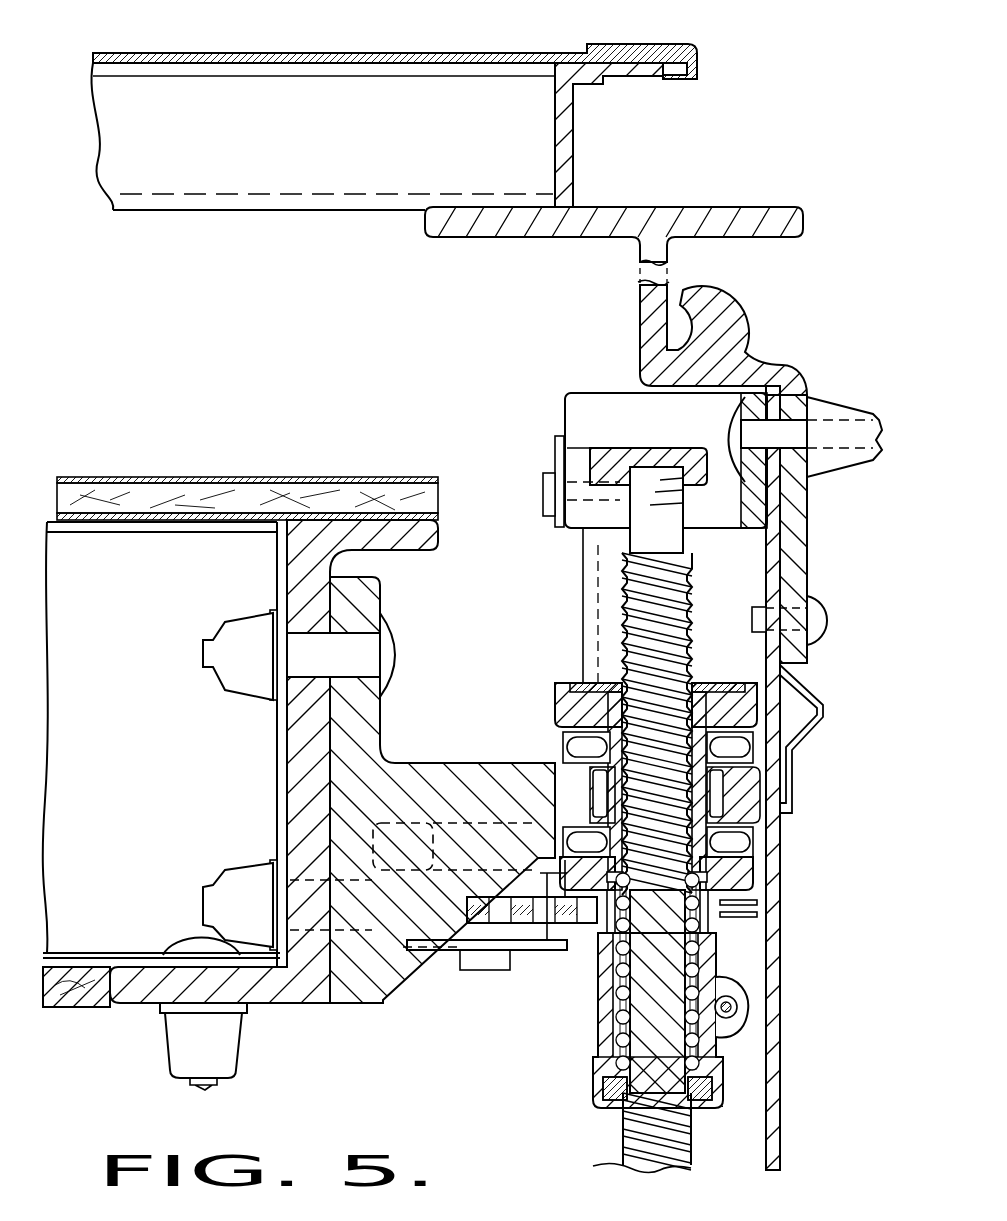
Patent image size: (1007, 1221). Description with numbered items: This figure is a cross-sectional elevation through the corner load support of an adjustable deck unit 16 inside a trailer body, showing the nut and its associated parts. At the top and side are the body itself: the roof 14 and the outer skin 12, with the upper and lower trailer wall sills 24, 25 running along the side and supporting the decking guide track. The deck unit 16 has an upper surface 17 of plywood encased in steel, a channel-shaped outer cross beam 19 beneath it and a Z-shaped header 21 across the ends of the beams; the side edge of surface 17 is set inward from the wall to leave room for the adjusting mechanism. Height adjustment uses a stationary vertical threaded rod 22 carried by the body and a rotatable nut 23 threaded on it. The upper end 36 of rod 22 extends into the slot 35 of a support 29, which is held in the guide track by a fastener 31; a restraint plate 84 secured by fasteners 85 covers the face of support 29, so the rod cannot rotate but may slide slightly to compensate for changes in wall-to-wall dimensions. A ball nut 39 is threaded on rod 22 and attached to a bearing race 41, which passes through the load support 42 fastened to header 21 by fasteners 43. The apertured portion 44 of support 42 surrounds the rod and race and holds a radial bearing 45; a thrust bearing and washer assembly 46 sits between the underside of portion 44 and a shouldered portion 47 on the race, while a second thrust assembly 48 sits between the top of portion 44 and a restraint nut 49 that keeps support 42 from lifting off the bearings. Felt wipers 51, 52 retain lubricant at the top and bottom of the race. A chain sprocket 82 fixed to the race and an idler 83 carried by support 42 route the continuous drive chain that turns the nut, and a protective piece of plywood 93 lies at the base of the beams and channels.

The skin 12 is at (327, 22).
The roof 14 is at (340, 213).
The deck unit 16 is at (221, 452).
The upper surface 17 is at (107, 490).
The outer cross beam 19 is at (80, 743).
The header 21 is at (307, 773).
The threaded rod 22 is at (640, 1142).
The nut 23 is at (659, 999).
The upper trailer wall sill 24 is at (787, 233).
The lower trailer wall sill 25 is at (713, 528).
The support 29 is at (757, 500).
The fastener 31 is at (840, 425).
The slot 35 is at (713, 530).
The upper end of rod 36 is at (630, 538).
The ball nut 39 is at (720, 1053).
The bearing race 41 is at (763, 800).
The load support 42 is at (430, 662).
The fastener 43 is at (240, 633).
The apertured portion 44 is at (696, 803).
The radial bearing 45 is at (565, 742).
The thrust bearing and washer assembly 46 is at (573, 825).
The shouldered portion 47 is at (747, 873).
The thrust bearing and washer assembly 48 is at (747, 747).
The restraint nut 49 is at (750, 700).
The felt lubricant-retaining wiper 51 is at (713, 683).
The felt lubricant-retaining wiper 52 is at (603, 1097).
The chain sprocket 82 is at (737, 910).
The idler 83 is at (548, 938).
The restraint plate 84 is at (557, 443).
The fastener 85 is at (547, 495).
The plywood 93 is at (93, 1007).